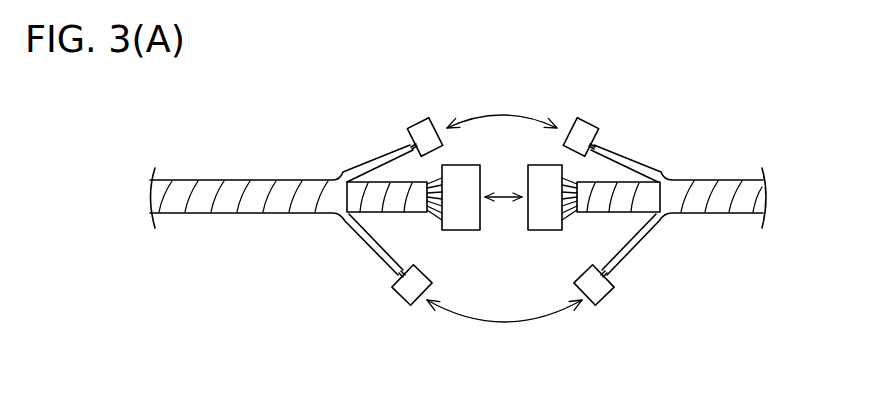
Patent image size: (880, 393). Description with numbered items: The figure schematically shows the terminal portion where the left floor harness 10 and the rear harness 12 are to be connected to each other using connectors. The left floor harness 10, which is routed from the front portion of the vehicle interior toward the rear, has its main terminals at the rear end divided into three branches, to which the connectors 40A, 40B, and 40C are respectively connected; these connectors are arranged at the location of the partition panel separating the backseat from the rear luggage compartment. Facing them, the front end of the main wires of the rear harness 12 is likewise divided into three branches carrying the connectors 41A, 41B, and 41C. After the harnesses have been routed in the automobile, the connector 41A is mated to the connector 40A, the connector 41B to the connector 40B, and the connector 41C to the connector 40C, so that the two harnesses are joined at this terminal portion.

The left floor harness 10 is at (252, 178).
The rear harness 12 is at (722, 178).
The connector 40A is at (421, 131).
The connector 40B is at (406, 292).
The connector 40C is at (460, 217).
The connector 41A is at (585, 131).
The connector 41B is at (601, 292).
The connector 41C is at (543, 217).